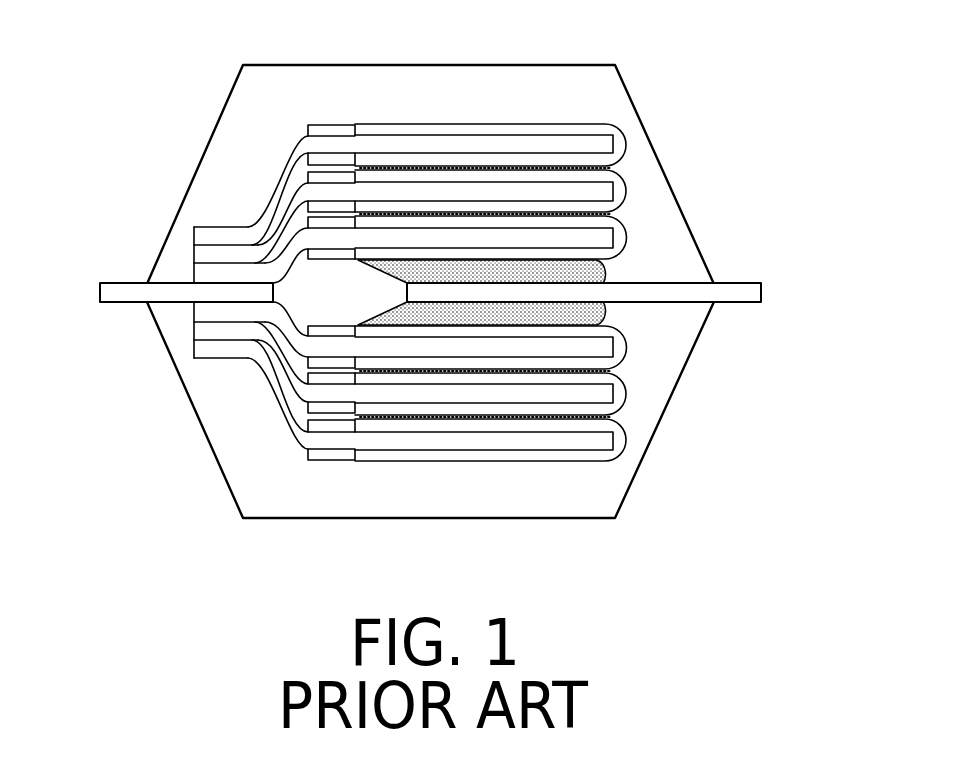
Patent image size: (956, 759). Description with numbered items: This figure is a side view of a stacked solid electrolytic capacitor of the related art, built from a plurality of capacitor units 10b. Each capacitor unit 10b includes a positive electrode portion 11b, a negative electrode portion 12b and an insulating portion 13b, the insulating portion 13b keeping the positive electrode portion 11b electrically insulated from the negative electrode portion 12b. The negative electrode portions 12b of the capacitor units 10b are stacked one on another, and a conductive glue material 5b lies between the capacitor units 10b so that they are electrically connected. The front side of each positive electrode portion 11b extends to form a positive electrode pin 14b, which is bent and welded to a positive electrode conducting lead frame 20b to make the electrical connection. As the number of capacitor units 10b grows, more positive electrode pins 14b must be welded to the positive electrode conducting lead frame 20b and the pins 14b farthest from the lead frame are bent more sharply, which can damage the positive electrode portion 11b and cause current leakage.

The bonding layer 5b is at (620, 170).
The capacitor unit 10b is at (627, 142).
The positive electrode portion 11b is at (277, 187).
The negative electrode portion 12b is at (563, 128).
The insulating portion 13b is at (330, 128).
The positive electrode pin 14b is at (220, 237).
The positive electrode conducting lead frame 20b is at (122, 290).